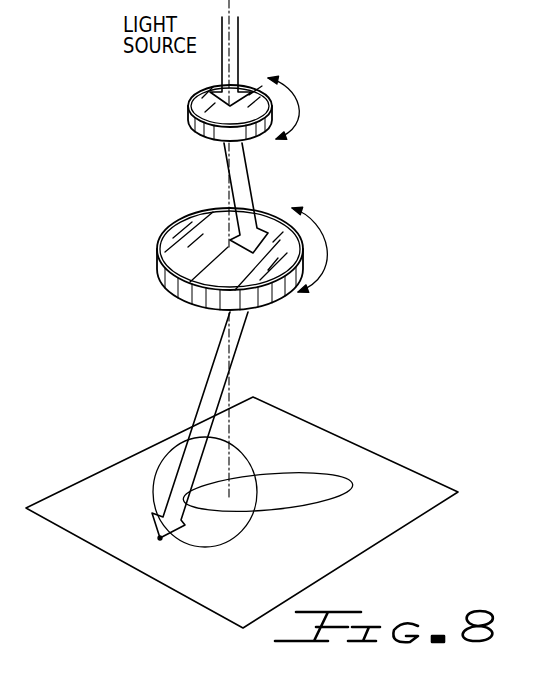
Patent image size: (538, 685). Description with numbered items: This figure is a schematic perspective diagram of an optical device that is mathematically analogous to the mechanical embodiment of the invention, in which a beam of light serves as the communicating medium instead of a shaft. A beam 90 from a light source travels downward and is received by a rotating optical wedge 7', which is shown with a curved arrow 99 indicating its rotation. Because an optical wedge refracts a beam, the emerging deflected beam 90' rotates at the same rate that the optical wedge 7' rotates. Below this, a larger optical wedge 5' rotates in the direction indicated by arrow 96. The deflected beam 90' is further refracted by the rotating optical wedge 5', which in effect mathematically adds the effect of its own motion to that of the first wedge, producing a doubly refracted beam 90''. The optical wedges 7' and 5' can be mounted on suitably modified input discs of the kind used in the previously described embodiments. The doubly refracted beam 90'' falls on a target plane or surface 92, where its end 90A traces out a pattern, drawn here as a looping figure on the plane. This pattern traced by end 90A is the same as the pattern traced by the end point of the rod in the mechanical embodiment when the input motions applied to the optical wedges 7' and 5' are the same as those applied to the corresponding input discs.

The beam 90 is at (248, 53).
The rotating optical wedge 7' is at (230, 113).
The rotation of first mirror 99 is at (305, 107).
The deflected beam 90' is at (263, 198).
The larger optical wedge 5' is at (224, 206).
The arrow 96 is at (333, 247).
The doubly refracted beam 90'' is at (200, 425).
The target plane 92 is at (347, 452).
The end of deflected beam 90A is at (158, 538).